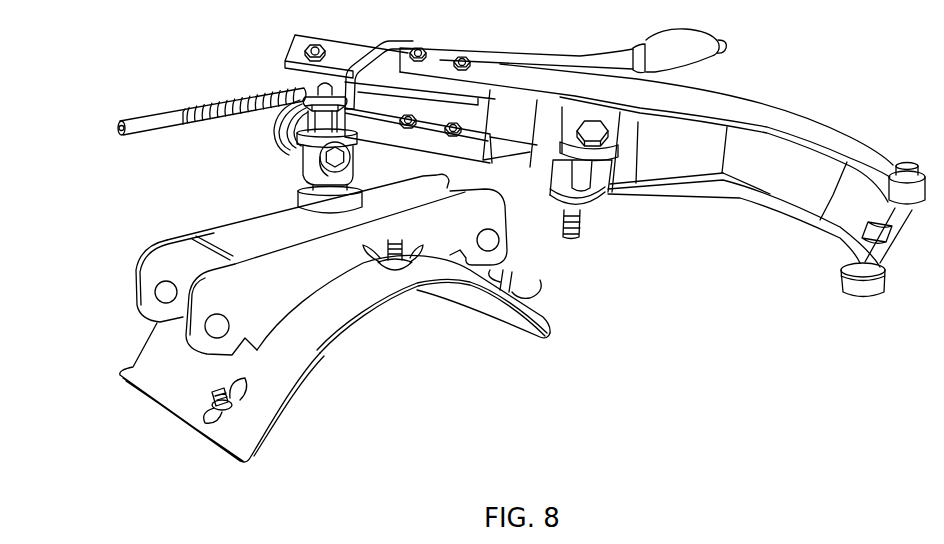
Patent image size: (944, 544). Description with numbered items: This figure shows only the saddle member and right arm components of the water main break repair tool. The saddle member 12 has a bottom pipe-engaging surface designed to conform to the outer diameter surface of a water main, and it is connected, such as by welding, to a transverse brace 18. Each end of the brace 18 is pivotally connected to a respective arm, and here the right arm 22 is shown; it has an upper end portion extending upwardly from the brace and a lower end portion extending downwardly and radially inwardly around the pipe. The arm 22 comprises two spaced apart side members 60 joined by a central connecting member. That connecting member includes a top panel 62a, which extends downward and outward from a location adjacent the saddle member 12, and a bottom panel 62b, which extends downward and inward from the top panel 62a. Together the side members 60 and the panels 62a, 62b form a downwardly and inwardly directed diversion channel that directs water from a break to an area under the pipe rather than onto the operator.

The saddle member 12 is at (363, 298).
The transverse brace 18 is at (222, 230).
The arm 22 is at (745, 93).
The side members 60 is at (803, 130).
The top panel 62a is at (661, 165).
The bottom panel 62b is at (773, 183).